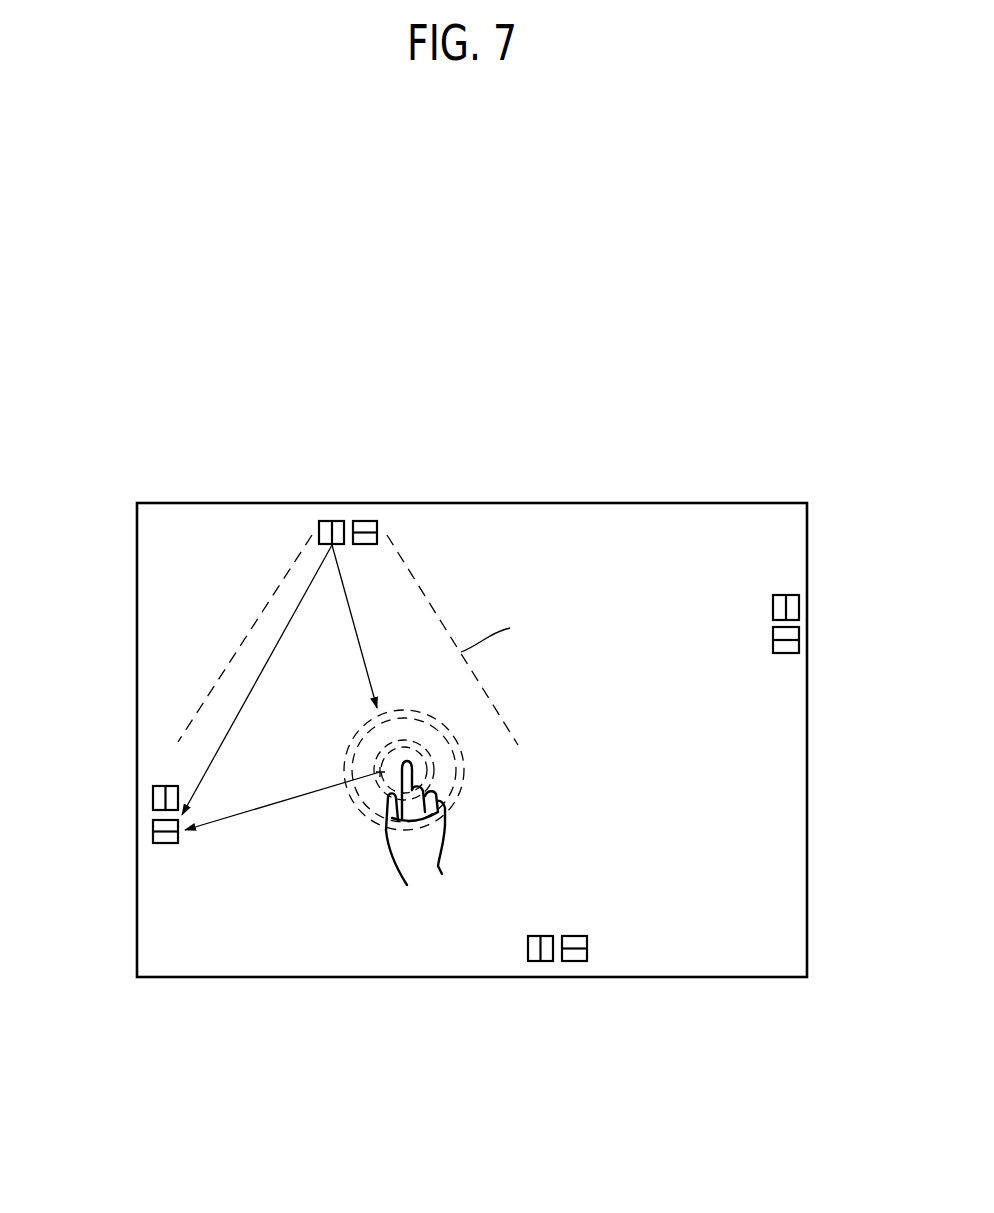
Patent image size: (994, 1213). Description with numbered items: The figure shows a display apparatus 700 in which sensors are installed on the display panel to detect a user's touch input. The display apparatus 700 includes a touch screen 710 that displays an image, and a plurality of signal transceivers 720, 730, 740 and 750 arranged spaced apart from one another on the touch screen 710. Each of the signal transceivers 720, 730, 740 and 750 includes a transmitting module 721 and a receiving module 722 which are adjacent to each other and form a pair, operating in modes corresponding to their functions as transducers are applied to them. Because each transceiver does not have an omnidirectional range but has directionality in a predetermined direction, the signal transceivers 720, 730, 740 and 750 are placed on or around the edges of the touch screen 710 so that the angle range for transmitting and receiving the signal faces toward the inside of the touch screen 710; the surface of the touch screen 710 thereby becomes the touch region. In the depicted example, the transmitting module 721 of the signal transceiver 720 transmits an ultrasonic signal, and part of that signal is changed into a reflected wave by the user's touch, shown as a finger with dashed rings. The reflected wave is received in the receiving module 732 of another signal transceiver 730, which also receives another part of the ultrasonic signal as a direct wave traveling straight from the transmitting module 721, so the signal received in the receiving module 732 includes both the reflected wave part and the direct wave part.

The display apparatus 700 is at (189, 358).
The touch screen 710 is at (682, 502).
The signal transceiver 720 is at (396, 421).
The transmitting module 721 is at (322, 521).
The receiving module 722 is at (367, 521).
The signal transceiver 730 is at (138, 815).
The receiving module 732 is at (153, 836).
The signal transceiver 740 is at (560, 978).
The signal transceiver 750 is at (809, 622).